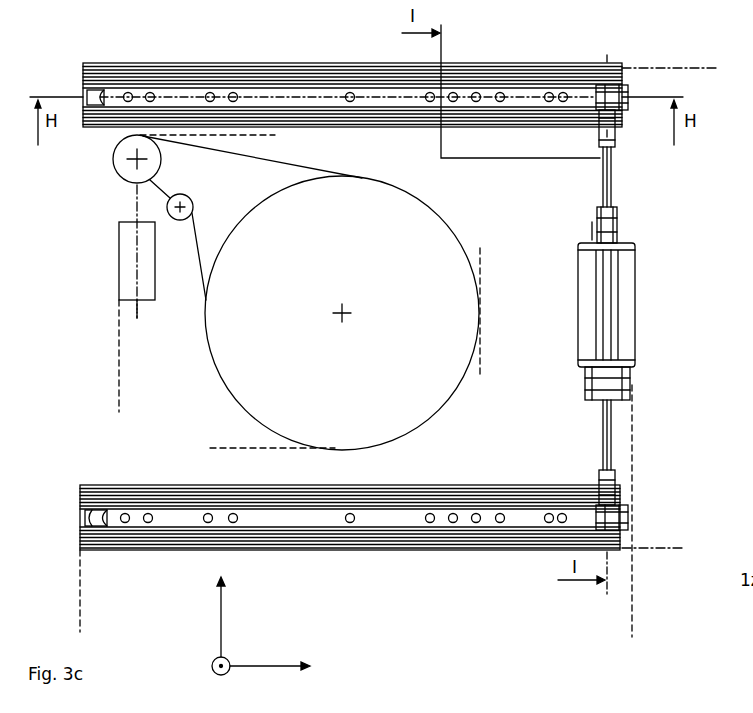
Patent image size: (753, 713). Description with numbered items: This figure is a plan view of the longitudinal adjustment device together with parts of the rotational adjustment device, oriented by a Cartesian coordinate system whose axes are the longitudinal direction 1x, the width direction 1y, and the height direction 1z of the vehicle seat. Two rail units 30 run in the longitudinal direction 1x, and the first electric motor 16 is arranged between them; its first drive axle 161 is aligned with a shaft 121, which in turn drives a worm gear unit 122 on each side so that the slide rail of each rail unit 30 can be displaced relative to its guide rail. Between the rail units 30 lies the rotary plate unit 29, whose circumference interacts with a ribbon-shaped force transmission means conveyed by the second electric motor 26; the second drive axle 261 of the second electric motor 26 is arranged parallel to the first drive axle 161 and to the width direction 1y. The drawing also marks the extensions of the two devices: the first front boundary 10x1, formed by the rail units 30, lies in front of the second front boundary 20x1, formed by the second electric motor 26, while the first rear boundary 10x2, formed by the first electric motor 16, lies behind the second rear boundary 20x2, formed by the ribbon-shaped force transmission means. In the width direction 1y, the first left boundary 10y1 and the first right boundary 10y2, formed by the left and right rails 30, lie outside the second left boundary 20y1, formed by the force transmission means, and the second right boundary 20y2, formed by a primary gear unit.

The rail unit 30 is at (553, 60).
The worm gear unit 122 is at (632, 90).
The shaft 121 is at (612, 196).
The first electric motor 16 is at (624, 322).
The first drive axle 161 is at (602, 330).
The rotary plate unit 29 is at (390, 447).
The second electric motor 26 is at (119, 253).
The second drive axle 261 is at (137, 305).
The second front boundary 20x1 is at (119, 342).
The second rear boundary 20x2 is at (482, 362).
The second left boundary 20y1 is at (212, 448).
The second right boundary 20y2 is at (252, 137).
The first front boundary 10x1 is at (82, 598).
The first rear boundary 10x2 is at (632, 598).
The first left boundary 10y1 is at (670, 548).
The first right boundary 10y2 is at (700, 68).
The longitudinal direction 1x is at (270, 666).
The width direction 1y is at (219, 612).
The height direction 1z is at (213, 676).